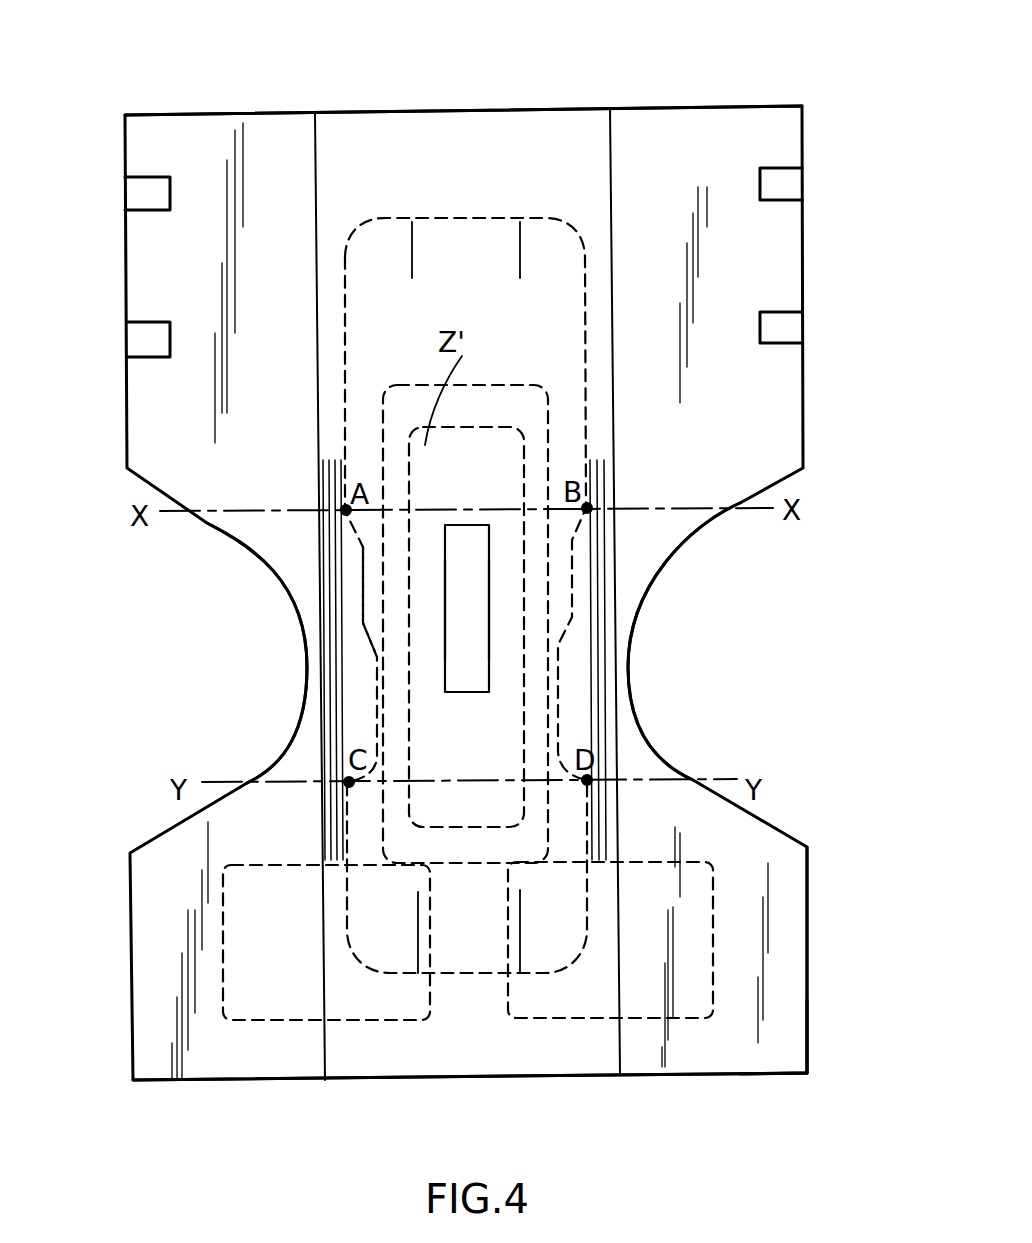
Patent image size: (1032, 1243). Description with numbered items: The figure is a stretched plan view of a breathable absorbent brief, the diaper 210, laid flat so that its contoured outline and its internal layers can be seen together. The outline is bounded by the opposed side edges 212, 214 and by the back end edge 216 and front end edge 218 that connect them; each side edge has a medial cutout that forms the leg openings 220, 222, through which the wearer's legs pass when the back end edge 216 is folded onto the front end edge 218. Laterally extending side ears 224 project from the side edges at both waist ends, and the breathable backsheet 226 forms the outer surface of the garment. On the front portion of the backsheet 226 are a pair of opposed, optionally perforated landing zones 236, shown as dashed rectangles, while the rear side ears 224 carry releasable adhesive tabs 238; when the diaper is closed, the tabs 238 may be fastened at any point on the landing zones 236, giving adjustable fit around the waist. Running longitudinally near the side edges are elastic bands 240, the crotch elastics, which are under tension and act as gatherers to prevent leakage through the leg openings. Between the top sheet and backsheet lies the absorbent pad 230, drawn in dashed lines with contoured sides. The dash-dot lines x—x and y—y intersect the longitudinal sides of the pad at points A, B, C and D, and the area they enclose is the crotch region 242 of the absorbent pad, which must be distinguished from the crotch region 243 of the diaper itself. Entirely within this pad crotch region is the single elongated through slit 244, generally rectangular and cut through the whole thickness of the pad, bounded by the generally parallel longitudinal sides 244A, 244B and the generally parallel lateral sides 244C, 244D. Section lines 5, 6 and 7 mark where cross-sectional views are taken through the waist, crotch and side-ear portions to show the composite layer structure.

The diaper 210 is at (655, 107).
The side edge 212 is at (124, 430).
The side edge 214 is at (807, 865).
The back end edge 216 is at (240, 112).
The front end edge 218 is at (405, 1082).
The leg opening 220 is at (307, 635).
The leg opening 222 is at (655, 740).
The side ears 224 is at (125, 265).
The breathable backsheet 226 is at (785, 1050).
The absorbent pad 230 is at (585, 335).
The landing zones 236 is at (263, 1020).
The adhesive tabs 238 is at (125, 185).
The elastic bands 240 is at (608, 566).
The crotch region of the absorbent pad 242 is at (553, 656).
The crotch region of the diaper 243 is at (300, 550).
The through slit 244 is at (463, 667).
The longitudinal side of the slit 244A is at (465, 525).
The longitudinal side of the slit 244B is at (455, 693).
The lateral side of the slit 244C is at (445, 615).
The lateral side of the slit 244D is at (489, 608).
The section line 5 is at (512, 70).
The section line 6 is at (355, 612).
The section line 7 is at (125, 955).